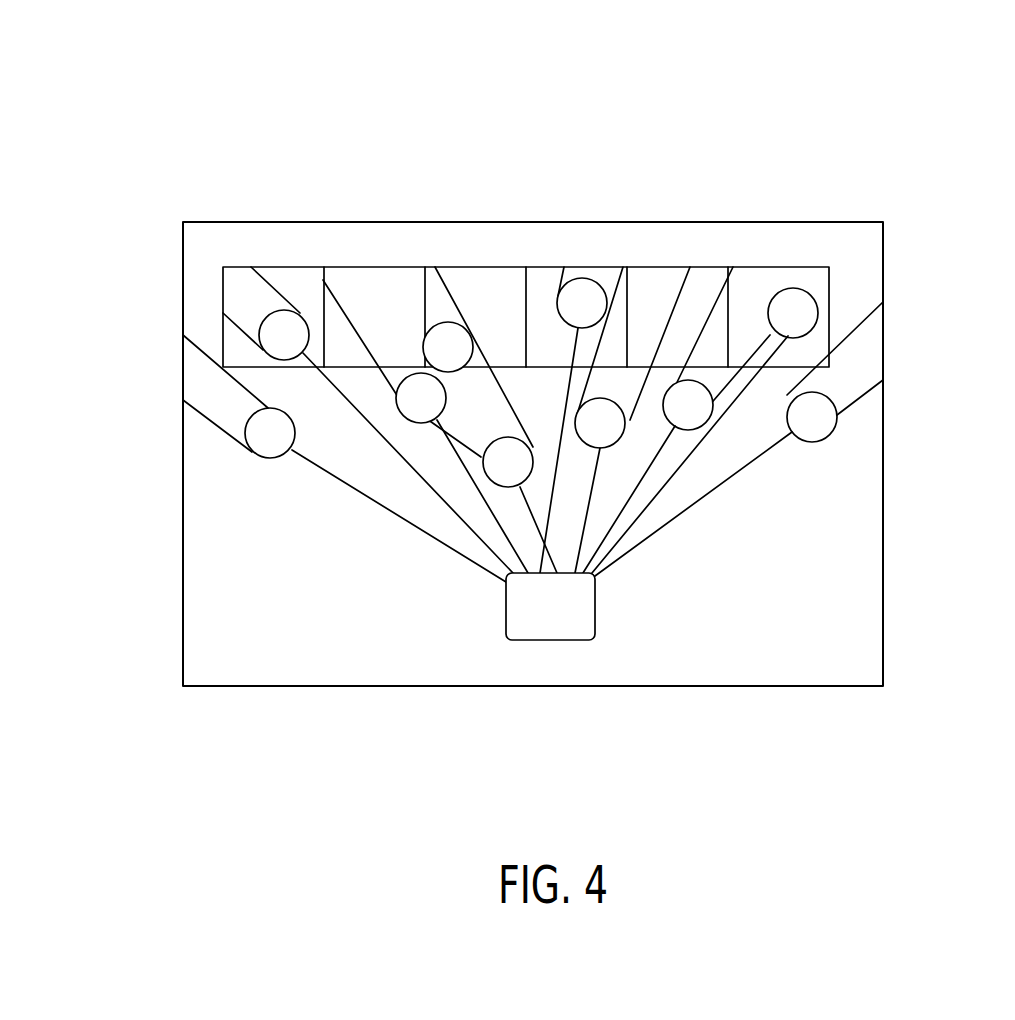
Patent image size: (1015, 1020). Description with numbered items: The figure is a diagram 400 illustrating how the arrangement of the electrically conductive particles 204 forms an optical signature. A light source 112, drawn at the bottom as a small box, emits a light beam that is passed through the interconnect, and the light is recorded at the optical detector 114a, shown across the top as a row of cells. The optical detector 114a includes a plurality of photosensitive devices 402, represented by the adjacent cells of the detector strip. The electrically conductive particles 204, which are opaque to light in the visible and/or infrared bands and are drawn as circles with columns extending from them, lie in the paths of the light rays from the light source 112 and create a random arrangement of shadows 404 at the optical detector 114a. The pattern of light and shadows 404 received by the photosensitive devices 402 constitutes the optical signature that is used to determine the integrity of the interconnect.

The diagram 400 is at (940, 121).
The photosensitive devices 402 is at (477, 282).
The shadows 404 is at (193, 382).
The electrically conductive particles 204 is at (260, 433).
The optical detector 114a is at (848, 320).
The light source 112 is at (548, 613).